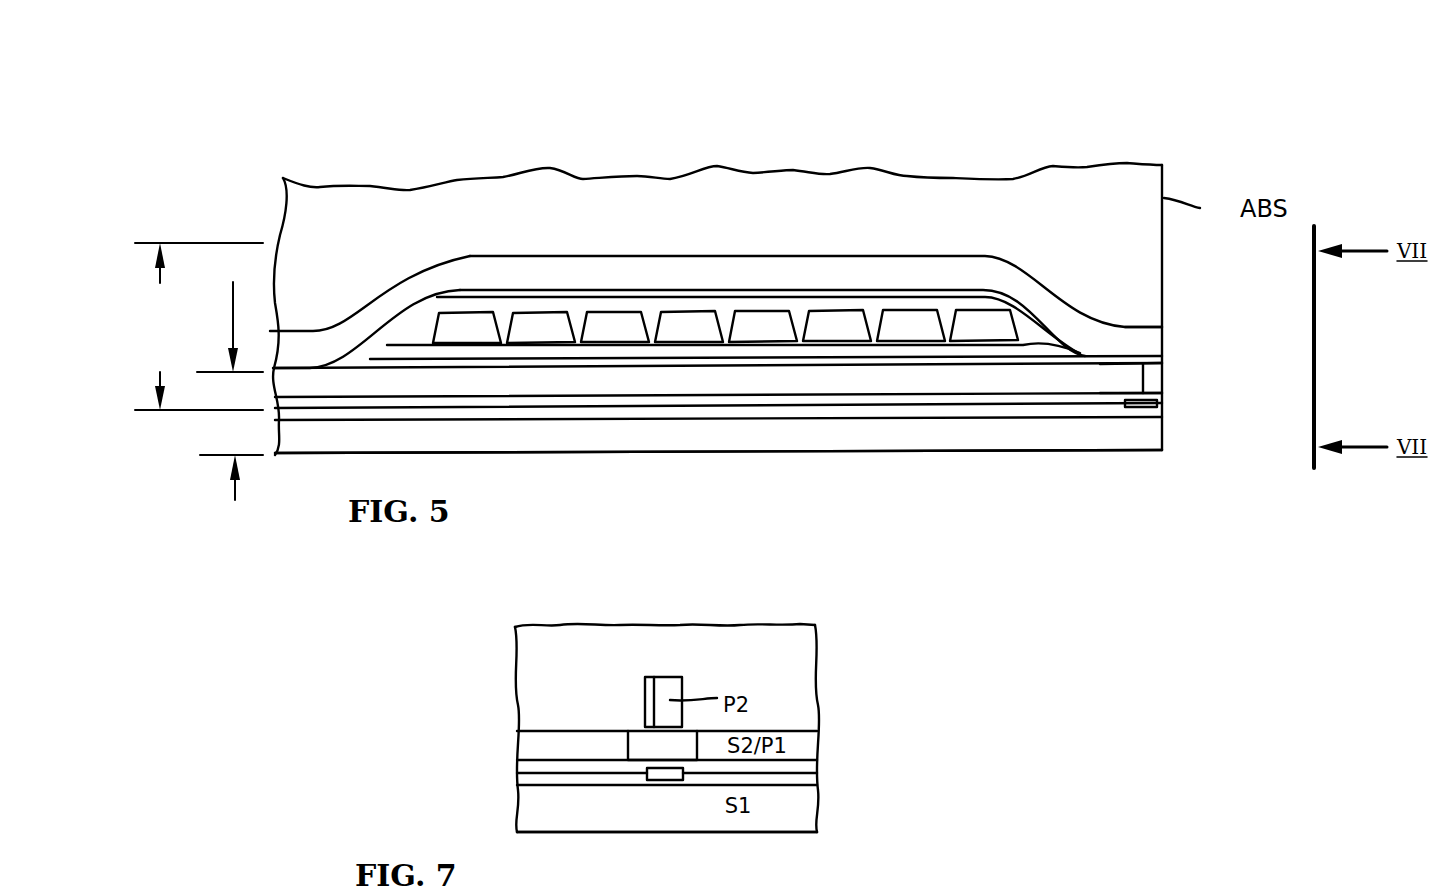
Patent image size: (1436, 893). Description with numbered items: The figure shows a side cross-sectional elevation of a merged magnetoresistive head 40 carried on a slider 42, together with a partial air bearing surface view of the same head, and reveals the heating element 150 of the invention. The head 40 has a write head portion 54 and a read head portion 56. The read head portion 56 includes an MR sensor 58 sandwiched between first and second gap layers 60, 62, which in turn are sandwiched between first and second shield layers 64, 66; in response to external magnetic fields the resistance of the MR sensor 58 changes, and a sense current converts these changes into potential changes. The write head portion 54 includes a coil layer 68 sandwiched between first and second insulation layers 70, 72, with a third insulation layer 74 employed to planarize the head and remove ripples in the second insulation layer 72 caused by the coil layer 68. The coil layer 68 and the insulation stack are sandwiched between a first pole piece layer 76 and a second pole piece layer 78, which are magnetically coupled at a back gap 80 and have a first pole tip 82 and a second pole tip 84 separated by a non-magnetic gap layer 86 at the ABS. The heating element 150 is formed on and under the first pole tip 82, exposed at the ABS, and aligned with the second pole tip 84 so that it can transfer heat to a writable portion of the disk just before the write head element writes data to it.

In FIG. 5, the magnetic head 40 is at (243, 145).
In FIG. 7, the magnetic head 40 is at (858, 628).
In FIG. 5, the slider 42 is at (360, 206).
In FIG. 7, the slider 42 is at (523, 652).
In FIG. 5, the write head portion 54 is at (195, 326).
In FIG. 5, the read head portion 56 is at (230, 528).
In FIG. 5, the MR sensor 58 is at (1160, 405).
In FIG. 7, the MR sensor 58 is at (667, 781).
In FIG. 5, the first gap layer 60 is at (727, 420).
In FIG. 7, the first gap layer 60 is at (550, 787).
In FIG. 5, the second gap layer 62 is at (658, 397).
In FIG. 7, the second gap layer 62 is at (783, 767).
In FIG. 5, the first shield layer 64 is at (862, 430).
In FIG. 7, the first shield layer 64 is at (800, 810).
In FIG. 5, the second shield layer 66 is at (718, 444).
In FIG. 7, the second shield layer 66 is at (609, 745).
In FIG. 5, the coil layer 68 is at (690, 325).
In FIG. 5, the first insulation layer 70 is at (541, 350).
In FIG. 5, the second insulation layer 72 is at (1030, 333).
In FIG. 5, the third insulation layer 74 is at (496, 292).
In FIG. 5, the first pole piece layer 76 is at (1028, 377).
In FIG. 7, the first pole piece layer 76 is at (523, 745).
In FIG. 5, the second pole piece layer 78 is at (855, 276).
In FIG. 5, the back gap 80 is at (312, 331).
In FIG. 5, the first pole tip 82 is at (1163, 373).
In FIG. 5, the second pole tip 84 is at (1150, 340).
In FIG. 7, the second pole tip 84 is at (670, 687).
In FIG. 5, the non-magnetic gap layer 86 is at (1163, 357).
In FIG. 7, the non-magnetic gap layer 86 is at (653, 677).
In FIG. 5, the heating element 150 is at (1155, 384).
In FIG. 7, the heating element 150 is at (655, 745).